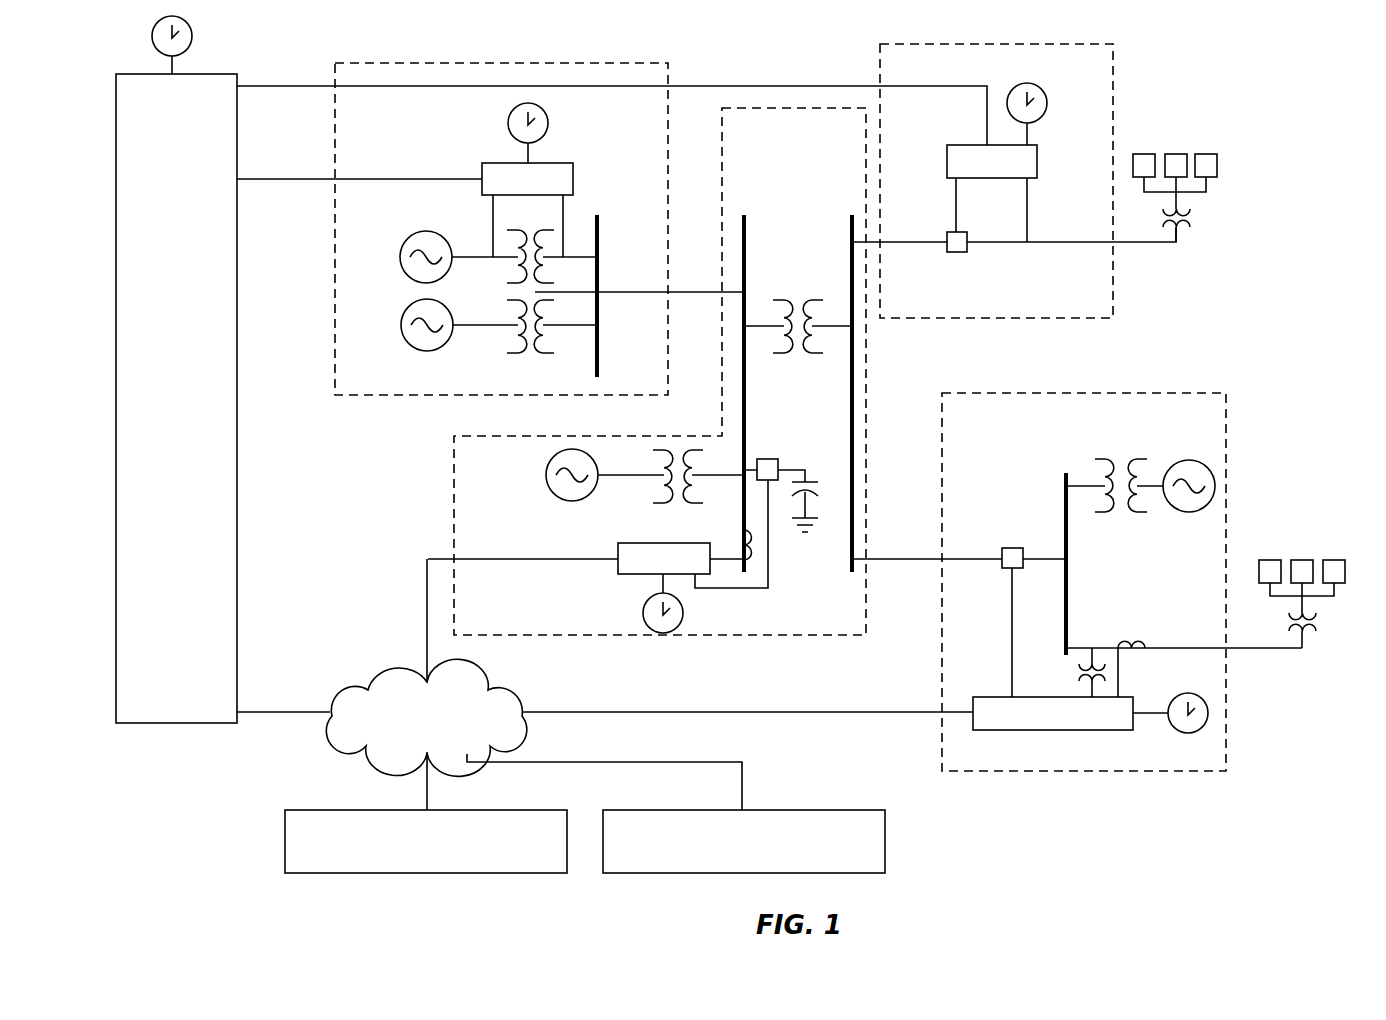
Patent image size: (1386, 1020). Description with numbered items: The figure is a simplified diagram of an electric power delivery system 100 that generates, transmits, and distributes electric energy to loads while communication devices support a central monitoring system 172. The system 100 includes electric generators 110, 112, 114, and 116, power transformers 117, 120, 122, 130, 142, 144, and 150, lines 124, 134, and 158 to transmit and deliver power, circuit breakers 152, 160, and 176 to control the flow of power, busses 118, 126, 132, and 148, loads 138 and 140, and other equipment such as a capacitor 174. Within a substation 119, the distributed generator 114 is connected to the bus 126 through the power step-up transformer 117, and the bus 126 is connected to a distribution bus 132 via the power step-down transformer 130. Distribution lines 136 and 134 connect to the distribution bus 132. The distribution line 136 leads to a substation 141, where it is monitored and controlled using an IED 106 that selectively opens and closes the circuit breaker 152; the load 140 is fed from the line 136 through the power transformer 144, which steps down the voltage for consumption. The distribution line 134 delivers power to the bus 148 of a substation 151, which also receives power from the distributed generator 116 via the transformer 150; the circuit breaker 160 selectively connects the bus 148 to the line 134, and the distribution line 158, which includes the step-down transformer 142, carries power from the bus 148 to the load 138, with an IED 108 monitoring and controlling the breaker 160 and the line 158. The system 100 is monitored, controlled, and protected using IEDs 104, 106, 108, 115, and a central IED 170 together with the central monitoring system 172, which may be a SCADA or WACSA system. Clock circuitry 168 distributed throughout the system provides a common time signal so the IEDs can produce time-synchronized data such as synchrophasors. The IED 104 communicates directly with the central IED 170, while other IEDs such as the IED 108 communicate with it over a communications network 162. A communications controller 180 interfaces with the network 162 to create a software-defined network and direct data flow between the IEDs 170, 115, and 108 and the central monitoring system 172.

The electric power delivery system 100 is at (1232, 75).
The IED 104 is at (492, 162).
The IED 106 is at (959, 144).
The IED 108 is at (1090, 732).
The electric generator 110 is at (410, 238).
The electric generator 112 is at (410, 305).
The electric generator 114 is at (549, 470).
The IED 115 is at (663, 542).
The distributed generator 116 is at (1189, 513).
The power step-up transformer 117 is at (656, 495).
The bus 118 is at (600, 365).
The substation 119 is at (528, 640).
The power transformer 120 is at (510, 272).
The power transformer 122 is at (530, 355).
The line 124 is at (680, 294).
The bus 126 is at (747, 358).
The power step-down transformer 130 is at (796, 298).
The distribution bus 132 is at (849, 543).
The distribution line 134 is at (958, 561).
The distribution line 136 is at (942, 246).
The load 138 is at (1300, 557).
The load 140 is at (1217, 165).
The substation 141 is at (1088, 320).
The power step-down transformer 142 is at (1318, 627).
The power transformer 144 is at (1192, 220).
The bus 148 is at (1064, 473).
The transformer 150 is at (1122, 458).
The substation 151 is at (1172, 773).
The circuit breaker 152 is at (967, 254).
The distribution line 158 is at (1150, 641).
The circuit breaker 160 is at (1010, 547).
The communications network 162 is at (386, 677).
The clock circuitry 168 is at (193, 39).
The central IED 170 is at (238, 399).
The central monitoring system 172 is at (331, 808).
The capacitor 174 is at (810, 478).
The circuit breaker 176 is at (765, 458).
The communications controller 180 is at (648, 808).